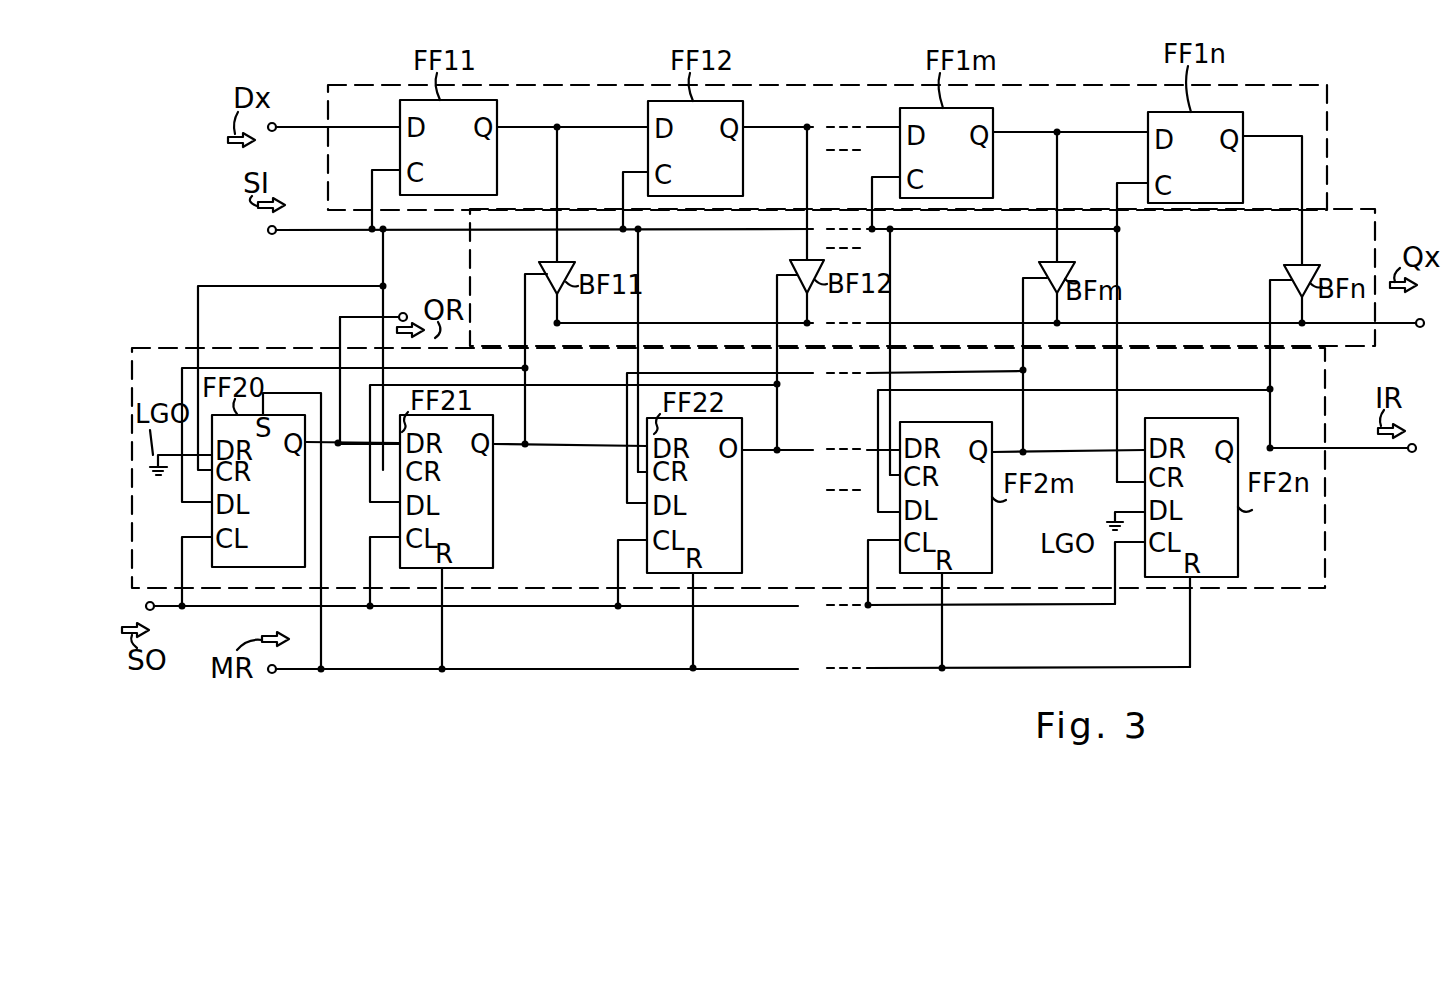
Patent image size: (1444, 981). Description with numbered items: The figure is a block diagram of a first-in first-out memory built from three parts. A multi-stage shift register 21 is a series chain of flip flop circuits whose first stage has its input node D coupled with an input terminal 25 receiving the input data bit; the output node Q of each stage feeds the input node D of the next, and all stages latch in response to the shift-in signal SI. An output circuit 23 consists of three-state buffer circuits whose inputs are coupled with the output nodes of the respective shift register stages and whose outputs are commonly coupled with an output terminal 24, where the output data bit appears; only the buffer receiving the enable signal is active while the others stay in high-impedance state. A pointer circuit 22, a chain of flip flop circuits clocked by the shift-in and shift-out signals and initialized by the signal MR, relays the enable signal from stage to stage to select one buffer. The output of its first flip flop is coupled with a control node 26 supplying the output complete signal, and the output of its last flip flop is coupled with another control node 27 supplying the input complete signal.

The multi-stage shift register 21 is at (1283, 82).
The pointer circuit 22 is at (1328, 568).
The output circuit 23 is at (1375, 211).
The output terminal 24 is at (1420, 328).
The input terminal 25 is at (275, 124).
The control node 26 is at (405, 314).
The control node 27 is at (1412, 453).